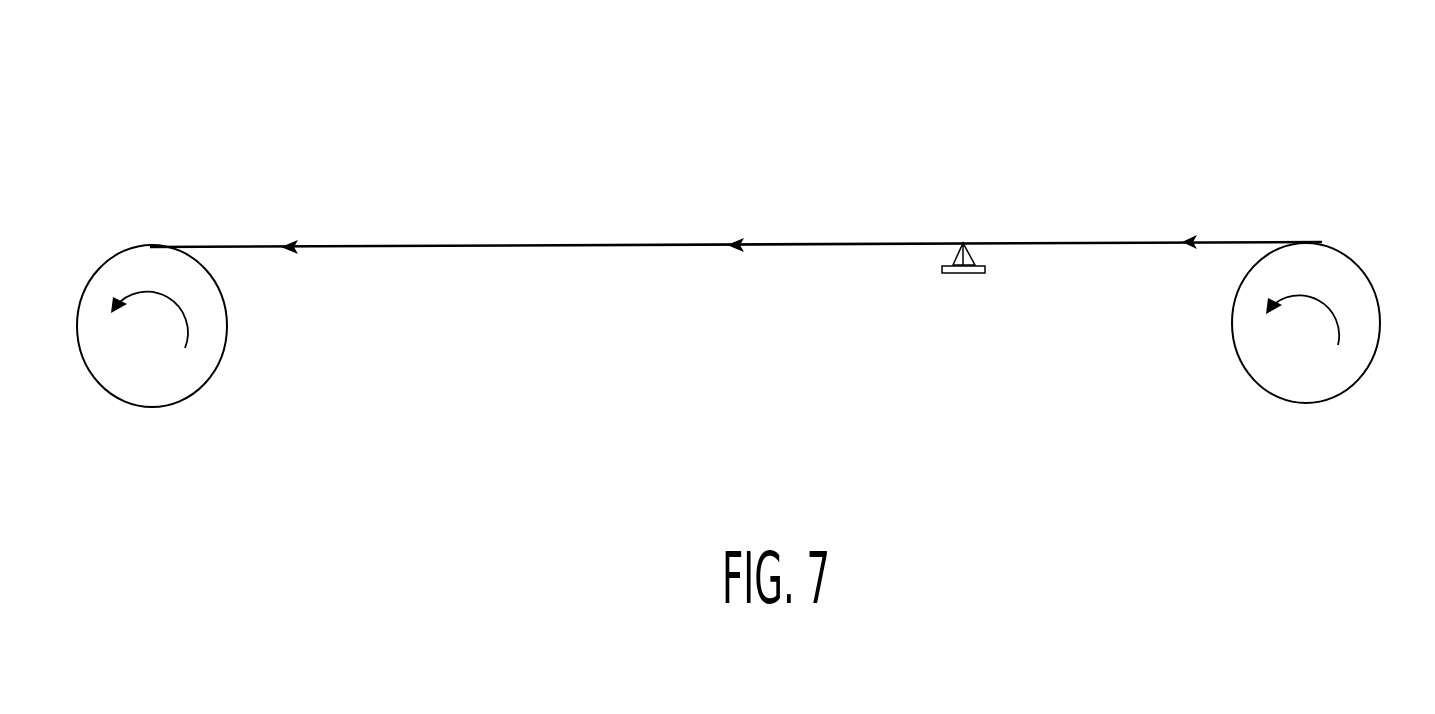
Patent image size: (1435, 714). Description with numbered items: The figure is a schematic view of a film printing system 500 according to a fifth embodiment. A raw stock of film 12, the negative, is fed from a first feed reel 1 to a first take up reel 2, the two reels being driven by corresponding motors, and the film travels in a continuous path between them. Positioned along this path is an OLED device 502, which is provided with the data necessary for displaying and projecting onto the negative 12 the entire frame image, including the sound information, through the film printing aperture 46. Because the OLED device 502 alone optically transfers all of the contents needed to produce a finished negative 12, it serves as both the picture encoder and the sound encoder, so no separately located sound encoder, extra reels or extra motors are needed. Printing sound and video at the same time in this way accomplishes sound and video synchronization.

The film printing system 500 is at (1343, 112).
The raw stock of film 12 is at (1237, 242).
The first feed reel 1 is at (1362, 267).
The first take up reel 2 is at (115, 397).
The film printing aperture 46 is at (966, 243).
The OLED device 502 is at (962, 273).